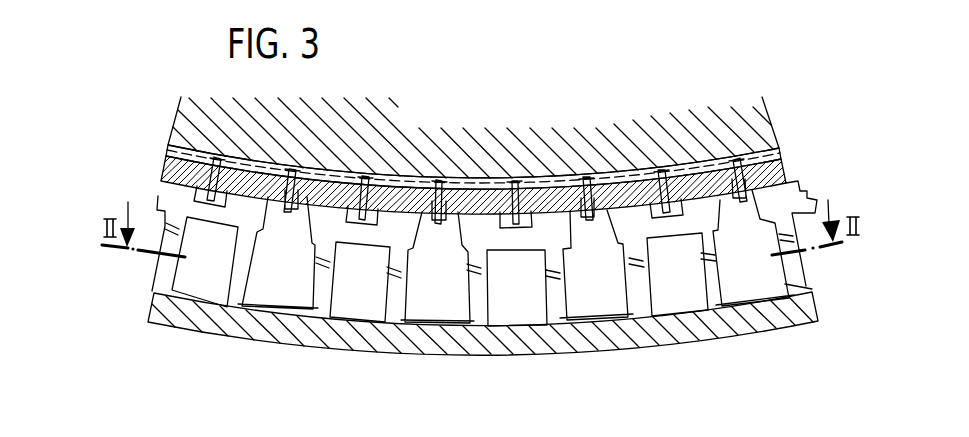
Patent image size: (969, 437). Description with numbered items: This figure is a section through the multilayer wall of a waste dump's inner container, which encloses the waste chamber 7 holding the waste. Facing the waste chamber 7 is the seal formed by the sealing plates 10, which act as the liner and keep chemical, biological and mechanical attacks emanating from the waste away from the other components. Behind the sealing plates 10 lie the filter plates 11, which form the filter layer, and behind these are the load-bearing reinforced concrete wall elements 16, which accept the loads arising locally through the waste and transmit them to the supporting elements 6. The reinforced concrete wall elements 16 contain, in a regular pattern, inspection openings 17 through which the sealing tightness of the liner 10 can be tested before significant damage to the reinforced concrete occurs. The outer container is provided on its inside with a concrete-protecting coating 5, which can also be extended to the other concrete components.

The concrete-protecting coating 5 is at (535, 243).
The supporting elements 6 is at (402, 300).
The waste chamber 7 is at (452, 147).
The sealing plates 10 is at (609, 190).
The filter plates 11 is at (540, 178).
The reinforced concrete wall elements 16 is at (642, 238).
The inspection openings 17 is at (608, 218).